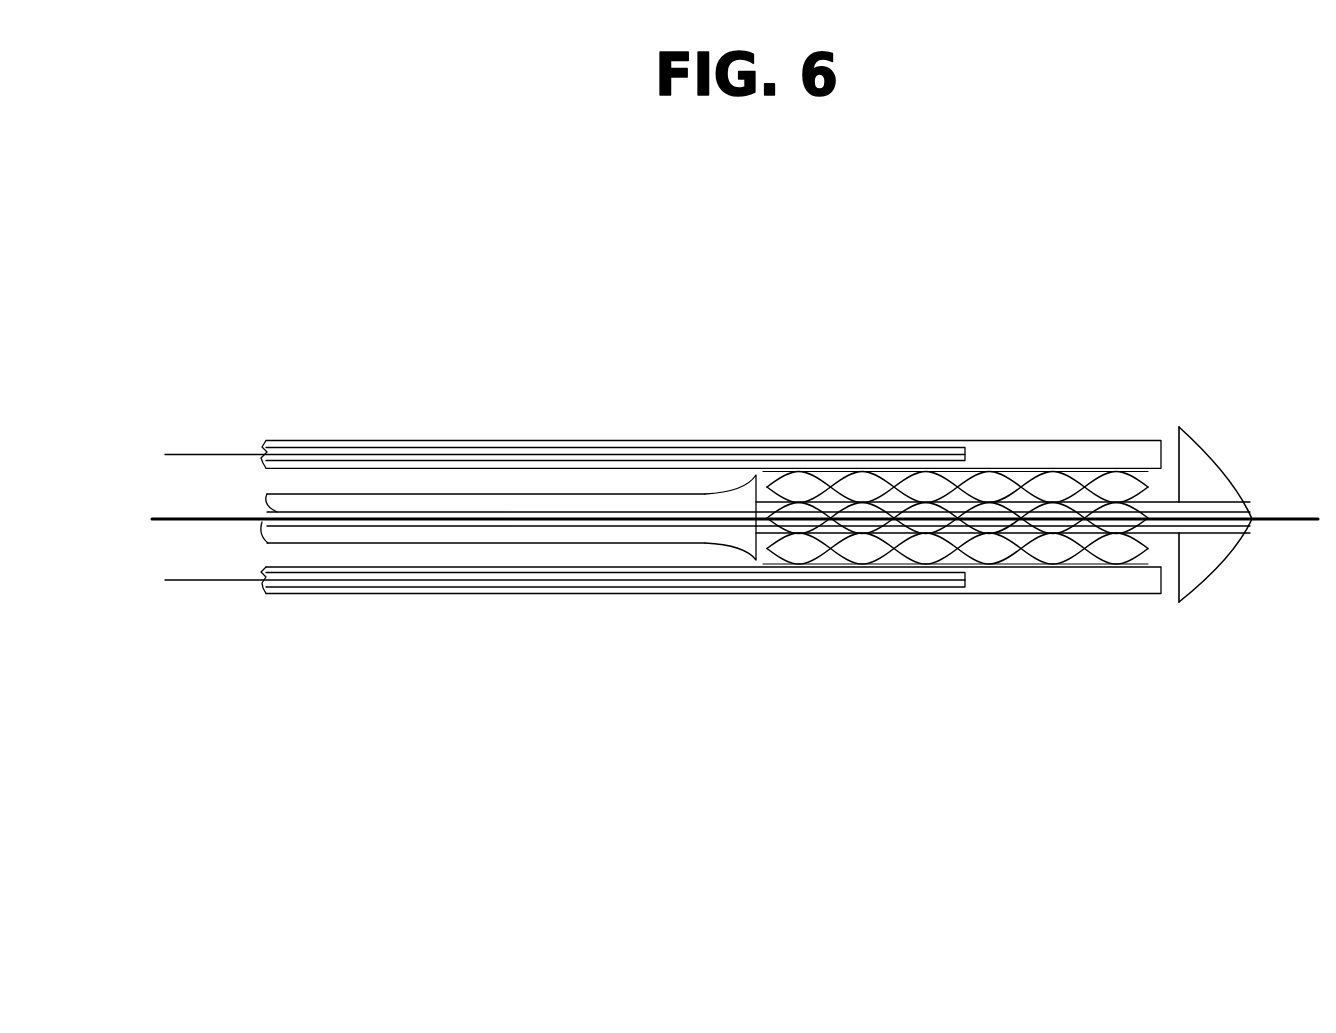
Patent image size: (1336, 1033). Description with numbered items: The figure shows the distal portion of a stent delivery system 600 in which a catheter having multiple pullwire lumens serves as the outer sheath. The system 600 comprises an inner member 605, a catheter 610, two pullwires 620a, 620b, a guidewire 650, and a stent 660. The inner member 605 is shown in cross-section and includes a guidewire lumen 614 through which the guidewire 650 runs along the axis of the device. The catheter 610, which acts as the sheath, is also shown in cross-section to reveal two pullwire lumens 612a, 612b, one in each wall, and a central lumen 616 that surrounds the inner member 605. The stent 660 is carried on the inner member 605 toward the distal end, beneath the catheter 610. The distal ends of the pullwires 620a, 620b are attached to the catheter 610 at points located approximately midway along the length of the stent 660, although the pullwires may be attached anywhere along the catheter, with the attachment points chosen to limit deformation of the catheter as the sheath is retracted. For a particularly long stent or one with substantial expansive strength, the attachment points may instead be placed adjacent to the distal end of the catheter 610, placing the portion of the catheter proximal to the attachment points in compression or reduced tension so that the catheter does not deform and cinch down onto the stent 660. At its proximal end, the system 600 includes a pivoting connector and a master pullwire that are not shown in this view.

The stent delivery system 600 is at (185, 182).
The inner member 605 is at (741, 484).
The catheter 610 is at (350, 440).
The pullwire lumen 612a is at (465, 452).
The pullwire lumen 612b is at (482, 582).
The guidewire lumen 614 is at (339, 523).
The central lumen 616 is at (637, 480).
The pullwire 620a is at (537, 454).
The pullwire 620b is at (555, 581).
The guidewire 650 is at (223, 521).
The stent 660 is at (895, 548).